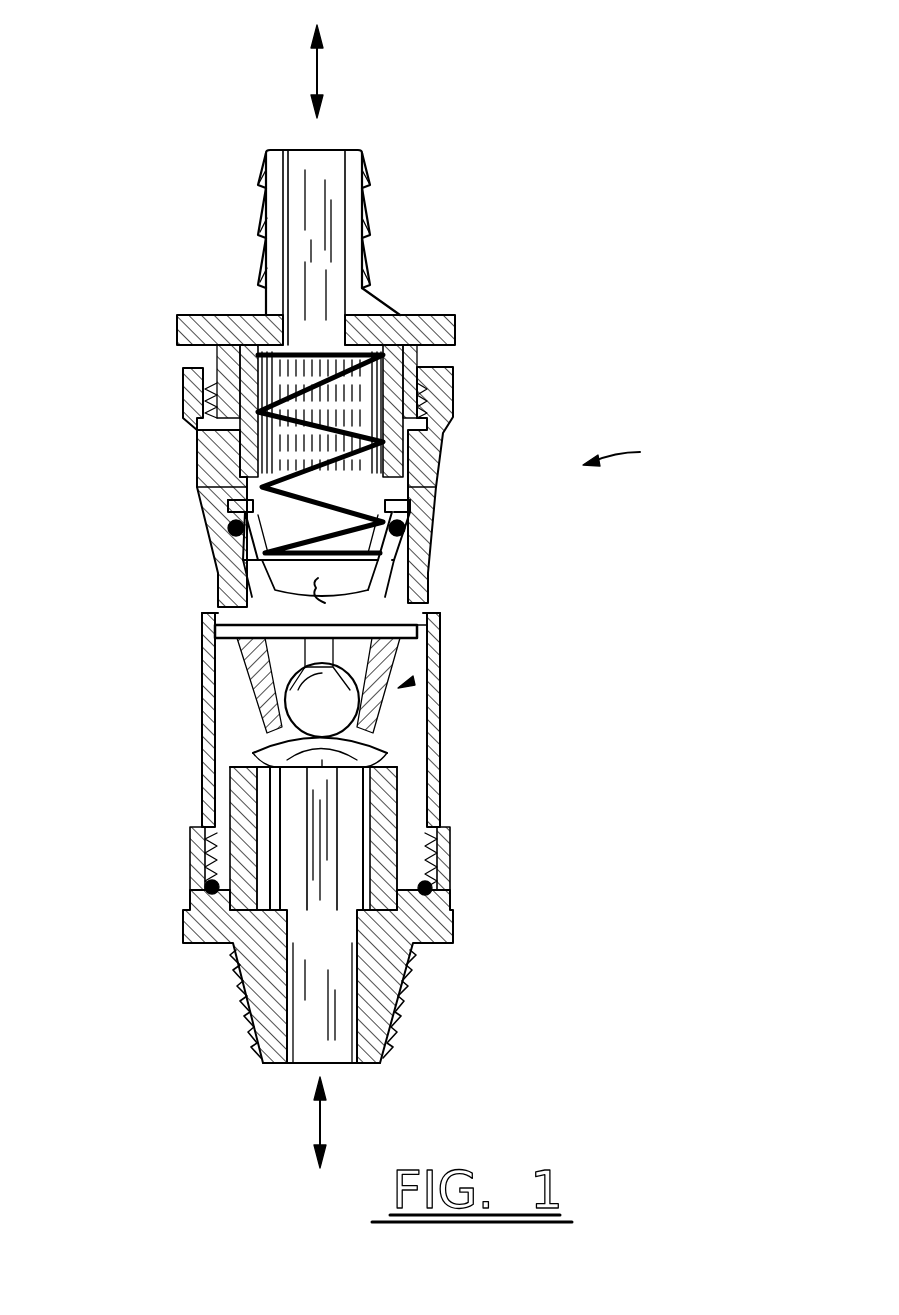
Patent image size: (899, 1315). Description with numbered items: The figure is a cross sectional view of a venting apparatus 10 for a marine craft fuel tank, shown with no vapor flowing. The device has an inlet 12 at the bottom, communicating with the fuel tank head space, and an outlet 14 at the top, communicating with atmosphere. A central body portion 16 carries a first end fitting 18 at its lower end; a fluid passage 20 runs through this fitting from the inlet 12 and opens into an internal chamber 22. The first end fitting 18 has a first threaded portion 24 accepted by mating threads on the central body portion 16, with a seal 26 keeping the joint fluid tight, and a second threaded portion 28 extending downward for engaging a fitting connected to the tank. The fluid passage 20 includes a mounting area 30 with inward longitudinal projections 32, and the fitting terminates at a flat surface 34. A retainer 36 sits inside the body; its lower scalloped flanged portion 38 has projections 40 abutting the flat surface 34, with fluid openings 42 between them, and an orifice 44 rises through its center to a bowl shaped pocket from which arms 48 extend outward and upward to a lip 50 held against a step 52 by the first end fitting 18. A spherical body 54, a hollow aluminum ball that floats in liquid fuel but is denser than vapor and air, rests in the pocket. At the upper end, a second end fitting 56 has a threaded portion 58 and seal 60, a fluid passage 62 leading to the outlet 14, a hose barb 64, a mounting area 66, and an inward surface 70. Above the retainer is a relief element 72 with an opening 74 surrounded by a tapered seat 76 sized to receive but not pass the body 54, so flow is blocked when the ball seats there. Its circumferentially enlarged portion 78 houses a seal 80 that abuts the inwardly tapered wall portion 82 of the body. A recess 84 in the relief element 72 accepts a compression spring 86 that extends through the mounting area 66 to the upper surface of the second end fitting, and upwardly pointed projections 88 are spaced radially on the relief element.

The venting apparatus 10 is at (644, 450).
The inlet 12 is at (340, 1066).
The outlet 14 is at (337, 152).
The central body portion 16 is at (420, 593).
The first end fitting 18 is at (450, 920).
The fluid passage 20 is at (343, 987).
The internal chamber 22 is at (440, 712).
The first threaded portion 24 is at (443, 833).
The seal 26 is at (443, 883).
The second threaded portion 28 is at (412, 963).
The mounting area 30 is at (430, 780).
The longitudinal projections 32 is at (200, 812).
The flat surface 34 is at (207, 757).
The retainer 36 is at (445, 648).
The lower scalloped flanged portion 38 is at (430, 737).
The projections 40 is at (200, 845).
The fluid openings 42 is at (207, 895).
The orifice 44 is at (217, 733).
The arms 48 is at (217, 688).
The lip 50 is at (203, 637).
The step 52 is at (215, 608).
The spherical body 54 is at (322, 700).
The second end fitting 56 is at (395, 320).
The threaded portion 58 is at (450, 383).
The seal 60 is at (182, 365).
The fluid passage 62 is at (297, 218).
The hose barb 64 is at (267, 170).
The mounting area 66 is at (385, 350).
The surface 70 is at (428, 503).
The relief element 72 is at (418, 567).
The opening 74 is at (237, 597).
The tapered seat 76 is at (341, 602).
The circumferentially enlarged portion 78 is at (425, 510).
The seal 80 is at (402, 511).
The tapered wall portion 82 is at (225, 530).
The recess 84 is at (198, 522).
The compression spring 86 is at (440, 445).
The projections 88 is at (197, 460).